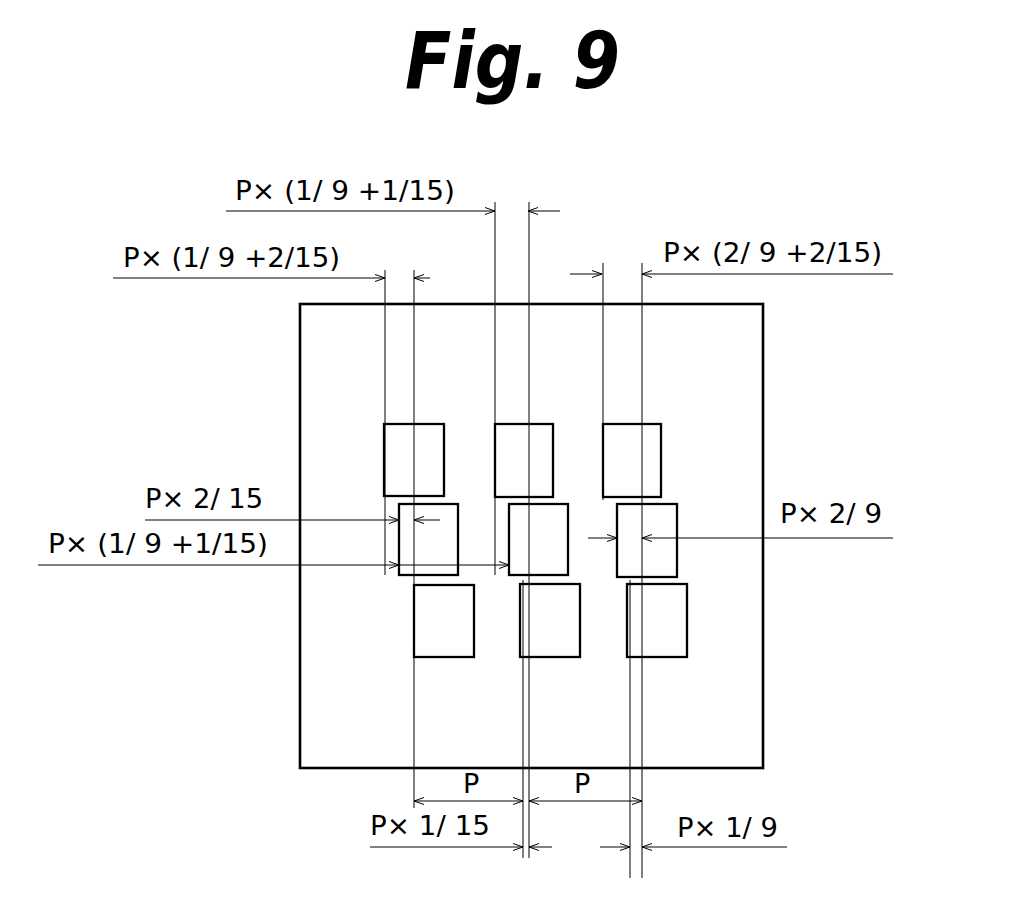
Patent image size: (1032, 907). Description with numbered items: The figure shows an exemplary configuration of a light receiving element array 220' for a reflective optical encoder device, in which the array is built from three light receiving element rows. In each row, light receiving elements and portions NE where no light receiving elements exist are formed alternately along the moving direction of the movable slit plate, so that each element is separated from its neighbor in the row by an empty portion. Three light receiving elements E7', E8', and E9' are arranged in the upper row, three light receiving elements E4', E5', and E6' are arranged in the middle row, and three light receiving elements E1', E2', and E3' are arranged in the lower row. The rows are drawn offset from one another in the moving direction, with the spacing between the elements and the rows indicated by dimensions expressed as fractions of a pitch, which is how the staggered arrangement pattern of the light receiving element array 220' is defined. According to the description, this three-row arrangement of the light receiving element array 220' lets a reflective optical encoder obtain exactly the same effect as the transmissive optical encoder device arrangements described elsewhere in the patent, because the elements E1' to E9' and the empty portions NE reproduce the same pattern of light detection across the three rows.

The light receiving element array 220' is at (596, 536).
The portions where no light receiving elements exist NE is at (470, 472).
The light receiving element E1' is at (341, 624).
The light receiving element E2' is at (556, 654).
The light receiving element E3' is at (733, 620).
The light receiving element E4' is at (333, 507).
The light receiving element E5' is at (506, 609).
The light receiving element E6' is at (727, 517).
The light receiving element E7' is at (326, 449).
The light receiving element E8' is at (538, 427).
The light receiving element E9' is at (720, 457).